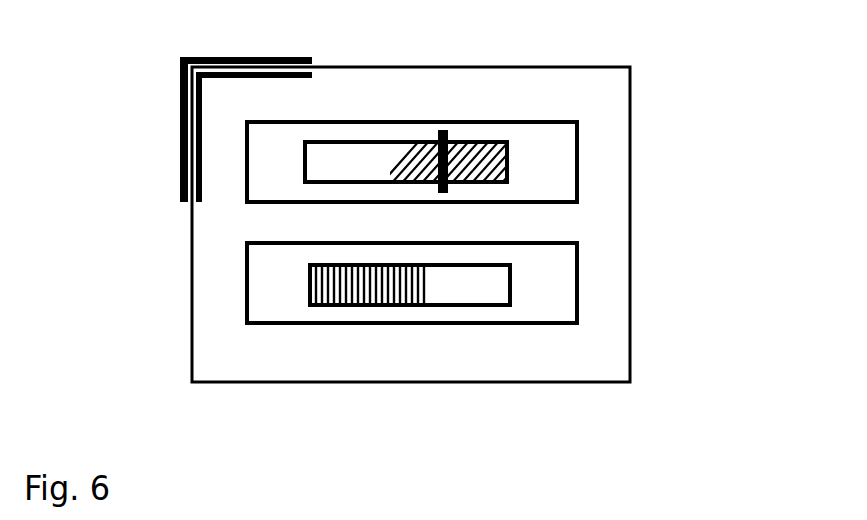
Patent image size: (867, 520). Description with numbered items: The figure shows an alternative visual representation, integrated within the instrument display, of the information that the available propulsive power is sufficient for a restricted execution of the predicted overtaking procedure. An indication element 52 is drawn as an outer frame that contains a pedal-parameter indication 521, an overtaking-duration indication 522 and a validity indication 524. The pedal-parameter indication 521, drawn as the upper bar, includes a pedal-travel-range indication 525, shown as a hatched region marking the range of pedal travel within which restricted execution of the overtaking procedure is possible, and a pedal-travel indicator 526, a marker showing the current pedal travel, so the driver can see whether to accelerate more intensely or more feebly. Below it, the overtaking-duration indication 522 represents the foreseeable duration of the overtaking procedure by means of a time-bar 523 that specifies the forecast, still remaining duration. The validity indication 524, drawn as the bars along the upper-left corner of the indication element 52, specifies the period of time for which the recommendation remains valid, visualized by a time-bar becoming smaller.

The indication element 52 is at (630, 213).
The pedal-parameter indication 521 is at (553, 122).
The overtaking-duration indication 522 is at (577, 278).
The time-bar 523 is at (358, 300).
The validity indication 524 is at (180, 107).
The pedal-travel-range indication 525 is at (463, 145).
The pedal-travel indicator 526 is at (438, 132).